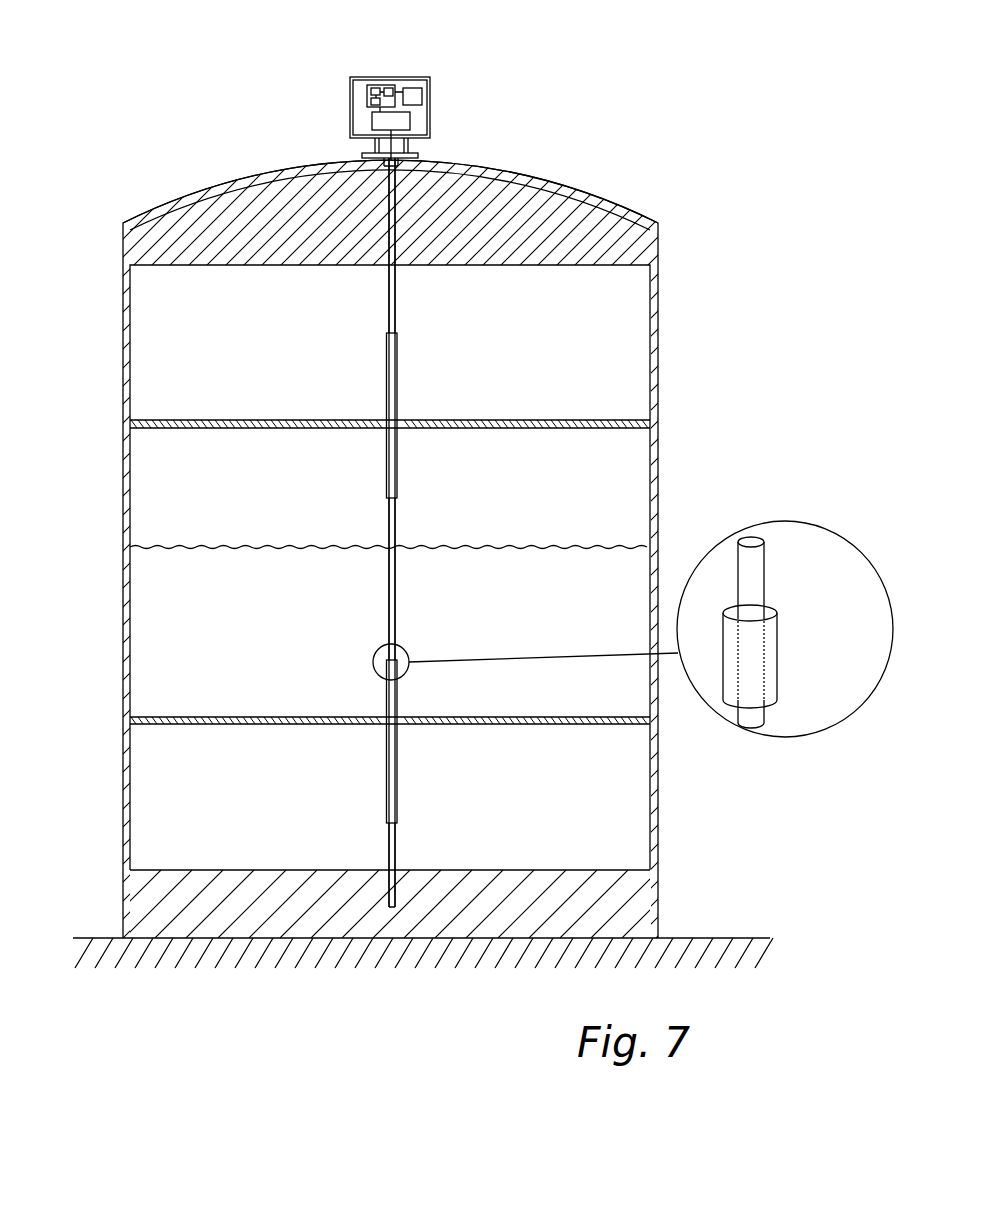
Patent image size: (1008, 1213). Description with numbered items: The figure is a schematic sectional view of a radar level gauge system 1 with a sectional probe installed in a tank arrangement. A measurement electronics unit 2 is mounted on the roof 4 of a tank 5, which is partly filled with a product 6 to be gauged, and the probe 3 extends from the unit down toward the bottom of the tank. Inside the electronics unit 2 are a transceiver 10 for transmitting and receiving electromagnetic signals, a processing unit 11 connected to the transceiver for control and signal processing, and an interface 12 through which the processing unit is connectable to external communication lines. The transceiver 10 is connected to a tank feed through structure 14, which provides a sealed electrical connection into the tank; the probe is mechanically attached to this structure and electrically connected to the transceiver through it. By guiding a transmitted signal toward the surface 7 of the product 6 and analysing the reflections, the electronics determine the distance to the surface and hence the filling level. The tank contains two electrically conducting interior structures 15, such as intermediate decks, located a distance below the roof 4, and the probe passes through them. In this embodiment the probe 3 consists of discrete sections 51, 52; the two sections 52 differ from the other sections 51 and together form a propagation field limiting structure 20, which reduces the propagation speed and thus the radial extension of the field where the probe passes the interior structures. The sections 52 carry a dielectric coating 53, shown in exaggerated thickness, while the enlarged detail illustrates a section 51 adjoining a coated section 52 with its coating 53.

The radar level gauge system 1 is at (336, 147).
The measurement electronics unit 2 is at (346, 75).
The probe 3 is at (396, 320).
The roof 4 is at (583, 191).
The tank 5 is at (660, 360).
The product 6 is at (543, 642).
The surface 7 is at (484, 545).
The transceiver 10 is at (400, 118).
The processing unit 11 is at (371, 85).
The interface 12 is at (410, 88).
The tank feed through structure 14 is at (400, 155).
The interior structures 15 is at (473, 420).
The propagation field limiting structure 20 is at (352, 460).
The sections 51 is at (388, 291).
The sections 52 is at (388, 370).
The dielectric coating 53 is at (777, 658).